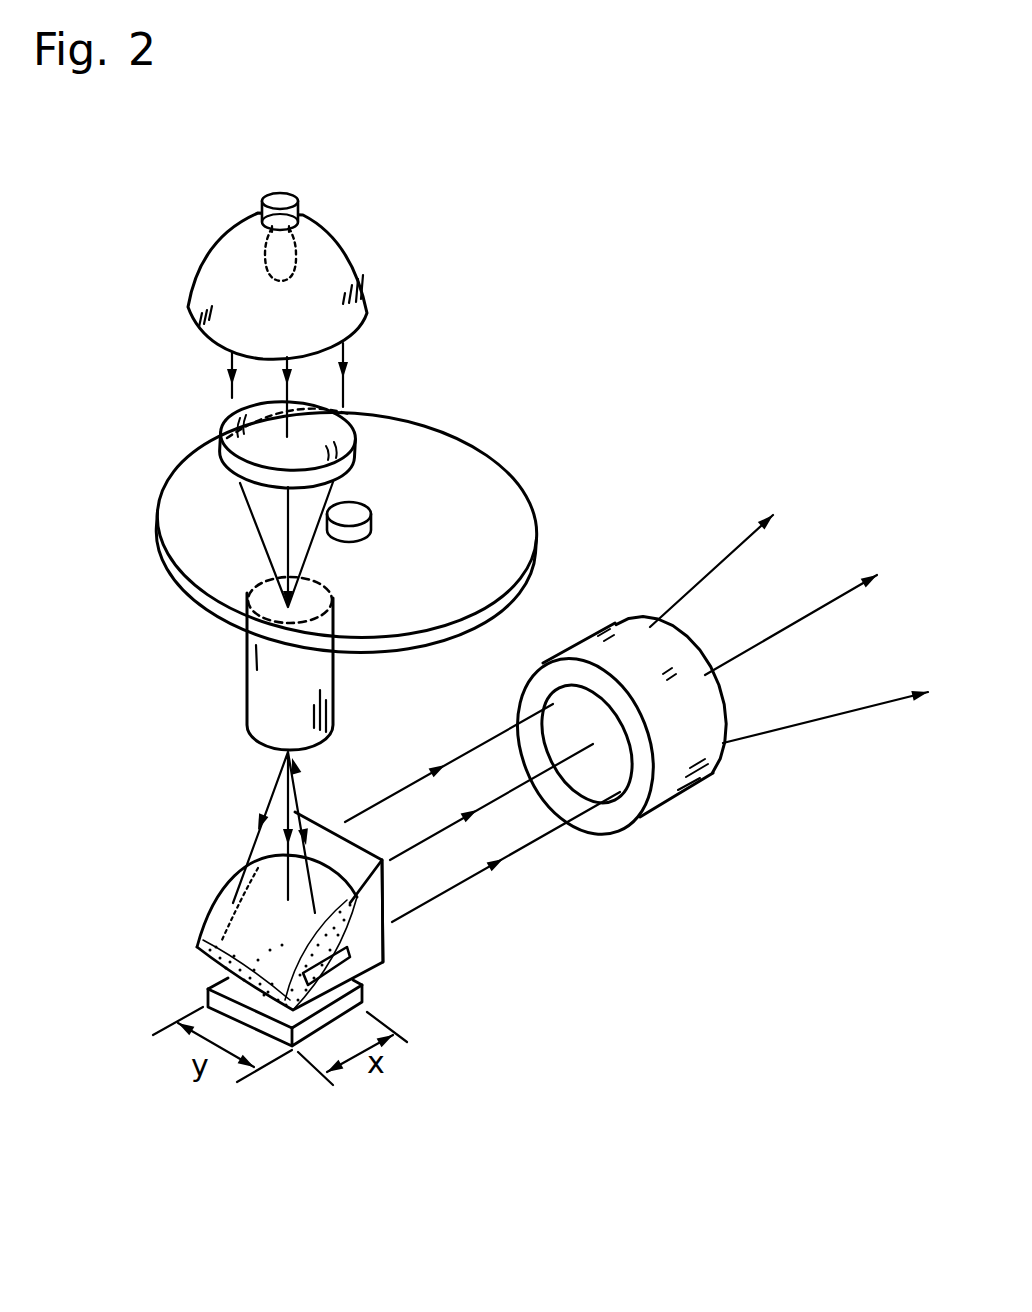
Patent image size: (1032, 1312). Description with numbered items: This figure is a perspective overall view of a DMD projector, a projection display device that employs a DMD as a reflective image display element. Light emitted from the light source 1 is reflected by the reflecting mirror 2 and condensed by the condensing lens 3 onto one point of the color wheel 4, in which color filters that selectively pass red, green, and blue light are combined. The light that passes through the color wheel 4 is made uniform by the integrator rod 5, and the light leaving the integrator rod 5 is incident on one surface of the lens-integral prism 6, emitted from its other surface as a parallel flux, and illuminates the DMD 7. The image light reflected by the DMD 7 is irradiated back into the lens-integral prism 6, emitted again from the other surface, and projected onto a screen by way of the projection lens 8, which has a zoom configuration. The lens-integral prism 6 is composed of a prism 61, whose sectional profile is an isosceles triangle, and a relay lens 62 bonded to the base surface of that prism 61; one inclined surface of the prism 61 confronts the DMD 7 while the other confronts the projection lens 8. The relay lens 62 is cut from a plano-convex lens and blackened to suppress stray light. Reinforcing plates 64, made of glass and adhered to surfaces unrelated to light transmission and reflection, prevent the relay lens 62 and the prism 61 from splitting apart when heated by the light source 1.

The light source 1 is at (297, 268).
The reflecting mirror 2 is at (217, 253).
The condensing lens 3 is at (343, 415).
The color wheel 4 is at (503, 507).
The integrator rod 5 is at (258, 672).
The lens-integral prism 6 is at (311, 911).
The prism 61 is at (390, 960).
The relay lens 62 is at (206, 921).
The reinforcing plates 64 is at (387, 943).
The DMD 7 is at (302, 1035).
The projection lens 8 is at (683, 787).